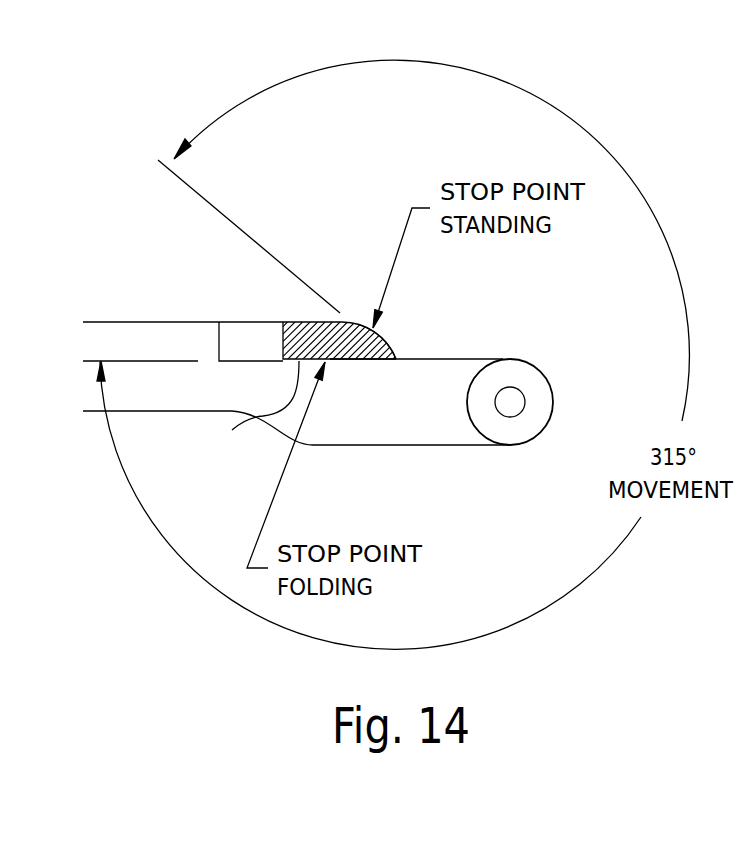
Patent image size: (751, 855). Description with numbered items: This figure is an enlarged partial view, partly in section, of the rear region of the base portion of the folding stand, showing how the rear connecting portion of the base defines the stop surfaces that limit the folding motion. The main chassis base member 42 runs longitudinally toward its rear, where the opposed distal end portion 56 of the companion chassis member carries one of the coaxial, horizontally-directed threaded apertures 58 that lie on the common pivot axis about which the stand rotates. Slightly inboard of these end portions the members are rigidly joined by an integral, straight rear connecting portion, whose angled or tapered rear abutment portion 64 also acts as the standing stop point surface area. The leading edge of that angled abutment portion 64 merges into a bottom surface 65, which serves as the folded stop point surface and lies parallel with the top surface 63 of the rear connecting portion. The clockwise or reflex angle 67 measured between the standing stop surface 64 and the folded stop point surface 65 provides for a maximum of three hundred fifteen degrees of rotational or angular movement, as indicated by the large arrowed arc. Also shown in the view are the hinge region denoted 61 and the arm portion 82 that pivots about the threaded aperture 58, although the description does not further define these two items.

The main chassis base member 42 is at (178, 332).
The distal end portion 56 is at (547, 378).
The threaded aperture 58 is at (510, 405).
The hinge 61 is at (232, 430).
The top surface 63 is at (362, 324).
The angled abutment portion 64 is at (385, 346).
The bottom surface 65 is at (369, 362).
The reflex angle 67 is at (595, 138).
The arm 82 is at (430, 410).